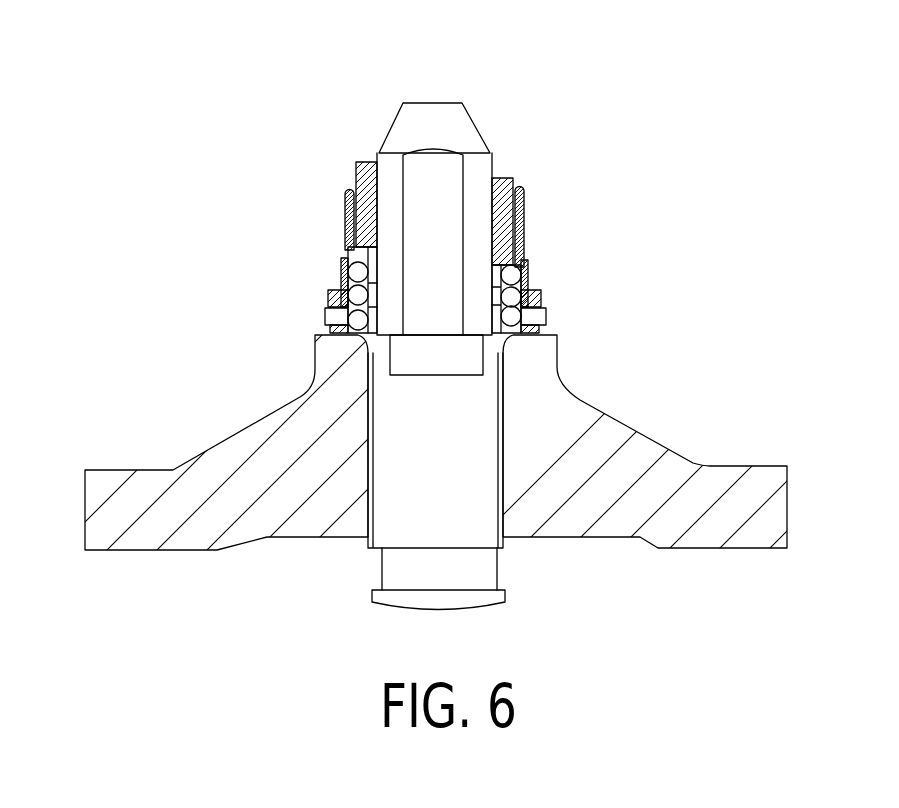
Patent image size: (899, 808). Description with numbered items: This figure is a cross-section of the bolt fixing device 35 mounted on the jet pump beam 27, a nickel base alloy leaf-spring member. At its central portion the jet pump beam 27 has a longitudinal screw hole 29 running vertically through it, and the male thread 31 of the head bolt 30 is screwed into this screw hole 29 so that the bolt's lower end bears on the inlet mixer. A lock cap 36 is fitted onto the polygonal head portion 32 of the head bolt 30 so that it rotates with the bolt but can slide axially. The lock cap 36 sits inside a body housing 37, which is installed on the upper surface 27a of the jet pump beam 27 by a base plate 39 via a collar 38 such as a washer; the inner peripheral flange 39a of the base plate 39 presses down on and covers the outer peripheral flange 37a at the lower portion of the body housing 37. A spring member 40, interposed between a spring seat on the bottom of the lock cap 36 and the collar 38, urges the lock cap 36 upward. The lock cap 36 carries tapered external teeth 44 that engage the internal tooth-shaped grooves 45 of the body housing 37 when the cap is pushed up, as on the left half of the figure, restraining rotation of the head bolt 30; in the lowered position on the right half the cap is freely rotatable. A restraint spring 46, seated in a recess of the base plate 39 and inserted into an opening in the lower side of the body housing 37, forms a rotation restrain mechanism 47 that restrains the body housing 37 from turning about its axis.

The jet pump beam 27 is at (681, 446).
The upper surface of the jet pump beam 27a is at (318, 333).
The longitudinal screw hole 29 is at (405, 500).
The head bolt 30 is at (441, 92).
The male thread 31 is at (508, 503).
The polygonal head portion 32 is at (495, 152).
The bolt fixing device 35 is at (577, 131).
The lock cap 36 is at (356, 166).
The body housing 37 is at (347, 192).
The outer peripheral flange 37a is at (327, 302).
The collar 38 is at (540, 337).
The base plate 39 is at (521, 306).
The inner peripheral flange 39a is at (340, 288).
The spring member 40 is at (527, 268).
The tapered external teeth 44 is at (347, 247).
The internal tooth-shaped grooves 45 is at (522, 238).
The restraint spring 46 is at (327, 317).
The rotation restrain mechanism 47 is at (296, 330).